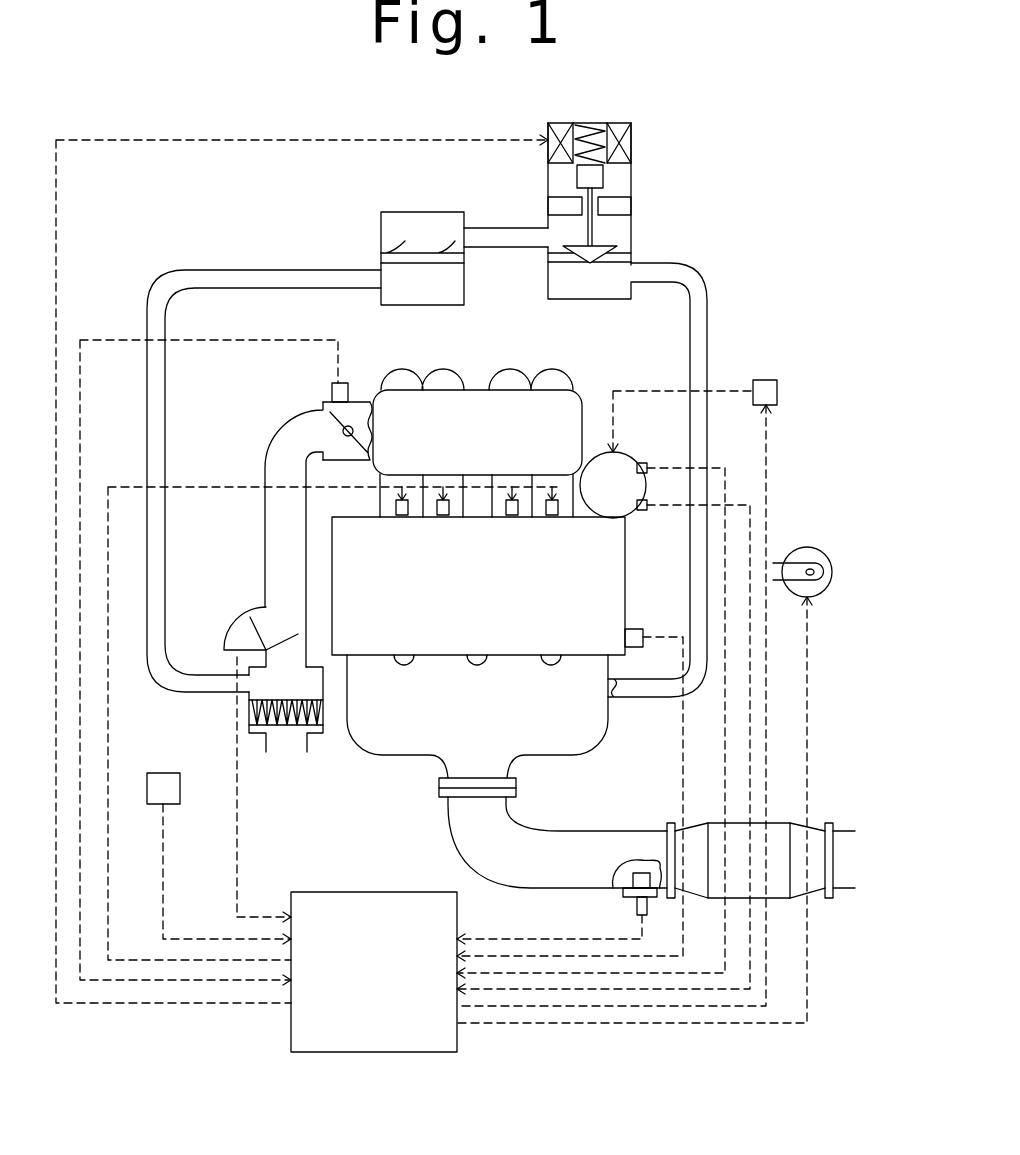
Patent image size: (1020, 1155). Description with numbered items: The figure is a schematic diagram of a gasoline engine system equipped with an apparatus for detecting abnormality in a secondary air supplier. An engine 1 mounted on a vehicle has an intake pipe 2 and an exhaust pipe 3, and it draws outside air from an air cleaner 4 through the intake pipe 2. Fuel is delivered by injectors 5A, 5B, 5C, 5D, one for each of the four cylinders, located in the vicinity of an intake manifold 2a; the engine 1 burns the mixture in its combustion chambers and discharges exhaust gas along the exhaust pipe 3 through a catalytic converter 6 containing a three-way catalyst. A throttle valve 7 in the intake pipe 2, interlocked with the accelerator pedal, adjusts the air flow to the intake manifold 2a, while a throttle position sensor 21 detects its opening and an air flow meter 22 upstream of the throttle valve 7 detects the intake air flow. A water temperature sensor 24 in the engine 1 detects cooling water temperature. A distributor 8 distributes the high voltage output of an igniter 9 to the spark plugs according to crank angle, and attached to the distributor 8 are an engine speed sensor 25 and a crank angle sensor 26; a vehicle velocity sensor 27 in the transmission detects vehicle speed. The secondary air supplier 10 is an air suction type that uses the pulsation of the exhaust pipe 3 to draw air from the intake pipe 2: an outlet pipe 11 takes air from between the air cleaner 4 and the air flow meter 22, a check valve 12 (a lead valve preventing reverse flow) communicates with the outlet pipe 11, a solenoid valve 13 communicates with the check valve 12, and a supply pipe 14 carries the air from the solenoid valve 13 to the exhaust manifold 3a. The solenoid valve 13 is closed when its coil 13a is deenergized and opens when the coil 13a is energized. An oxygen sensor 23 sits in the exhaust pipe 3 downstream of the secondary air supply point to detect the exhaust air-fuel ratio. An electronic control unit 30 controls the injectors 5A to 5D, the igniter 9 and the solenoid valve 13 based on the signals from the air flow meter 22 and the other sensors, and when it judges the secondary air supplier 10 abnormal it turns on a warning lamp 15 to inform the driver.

The engine 1 is at (641, 606).
The intake pipe 2 is at (265, 545).
The intake manifold 2a is at (473, 408).
The exhaust pipe 3 is at (620, 831).
The exhaust manifold 3a is at (580, 733).
The air cleaner 4 is at (323, 712).
The injector 5A is at (402, 517).
The injector 5B is at (443, 517).
The injector 5C is at (512, 517).
The injector 5D is at (552, 517).
The catalytic converter 6 is at (778, 823).
The throttle valve 7 is at (338, 426).
The distributor 8 is at (610, 498).
The igniter 9 is at (777, 392).
The secondary air supplier 10 is at (726, 288).
The outlet pipe 11 is at (165, 393).
The check valve 12 is at (430, 212).
The solenoid valve 13 is at (634, 209).
The coil 13a is at (634, 140).
The supply pipe 14 is at (707, 322).
The warning lamp 15 is at (832, 556).
The throttle position sensor 21 is at (348, 393).
The air flow meter 22 is at (232, 630).
The oxygen sensor 23 is at (628, 896).
The water temperature sensor 24 is at (633, 647).
The engine speed sensor 25 is at (645, 463).
The crank angle sensor 26 is at (645, 510).
The vehicle velocity sensor 27 is at (180, 780).
The electronic control unit 30 is at (372, 892).